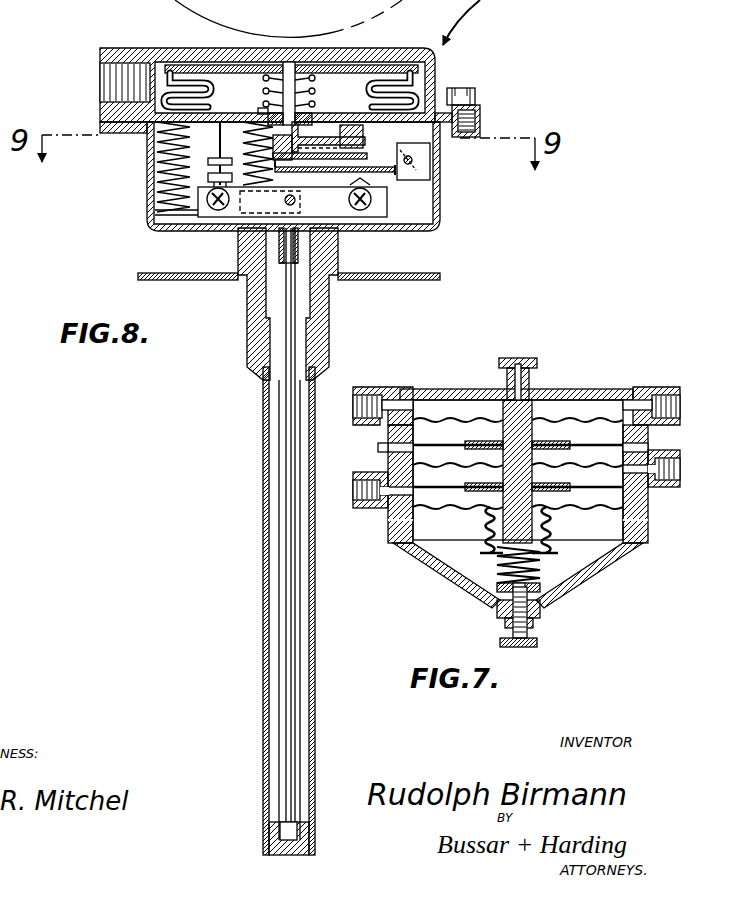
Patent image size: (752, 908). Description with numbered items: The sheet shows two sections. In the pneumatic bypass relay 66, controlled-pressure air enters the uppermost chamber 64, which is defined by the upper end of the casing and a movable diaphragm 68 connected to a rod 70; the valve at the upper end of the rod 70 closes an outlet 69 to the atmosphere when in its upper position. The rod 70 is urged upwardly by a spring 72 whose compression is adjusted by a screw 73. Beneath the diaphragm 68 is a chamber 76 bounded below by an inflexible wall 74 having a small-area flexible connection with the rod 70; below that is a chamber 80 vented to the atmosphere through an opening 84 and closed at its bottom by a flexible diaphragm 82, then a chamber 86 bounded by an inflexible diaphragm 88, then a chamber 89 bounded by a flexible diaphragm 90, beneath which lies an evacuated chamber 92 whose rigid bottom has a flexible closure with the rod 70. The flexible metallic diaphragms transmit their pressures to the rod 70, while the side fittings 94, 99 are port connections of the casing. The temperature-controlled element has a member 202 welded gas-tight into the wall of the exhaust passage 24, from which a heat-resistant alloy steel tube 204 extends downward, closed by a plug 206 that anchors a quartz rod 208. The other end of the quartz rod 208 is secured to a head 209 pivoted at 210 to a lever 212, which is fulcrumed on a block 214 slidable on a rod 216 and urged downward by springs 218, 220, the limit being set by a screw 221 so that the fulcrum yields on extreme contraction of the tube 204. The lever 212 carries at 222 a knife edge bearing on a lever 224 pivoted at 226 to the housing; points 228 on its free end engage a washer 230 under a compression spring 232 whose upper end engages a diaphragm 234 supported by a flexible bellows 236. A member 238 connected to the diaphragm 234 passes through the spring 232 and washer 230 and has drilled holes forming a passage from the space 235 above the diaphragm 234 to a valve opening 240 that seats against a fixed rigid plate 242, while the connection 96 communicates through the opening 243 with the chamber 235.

In FIG. 8, the opening 243 is at (100, 82).
In FIG. 8, the diaphragm 234 is at (388, 70).
In FIG. 8, the flexible bellows 236 is at (170, 80).
In FIG. 8, the space above the diaphragm 235 is at (415, 85).
In FIG. 8, the washer 230 is at (300, 118).
In FIG. 8, the compression spring 232 is at (265, 88).
In FIG. 8, the upwardly extending points 228 is at (262, 111).
In FIG. 8, the fixed rigid plate 242 is at (460, 100).
In FIG. 8, the member 238 is at (478, 118).
In FIG. 8, the spring 218 is at (177, 155).
In FIG. 8, the spring 220 is at (265, 135).
In FIG. 8, the rod 216 is at (215, 152).
In FIG. 8, the screw 221 is at (215, 170).
In FIG. 8, the block 214 is at (175, 210).
In FIG. 8, the lever 212 is at (385, 200).
In FIG. 8, the pivot 210 is at (292, 195).
In FIG. 8, the valve opening 240 is at (330, 125).
In FIG. 8, the lever 224 is at (395, 170).
In FIG. 8, the knife edge 222 is at (370, 172).
In FIG. 8, the pivot 226 is at (415, 158).
In FIG. 8, the exhaust passage 24 is at (425, 275).
In FIG. 8, the member 202 is at (335, 250).
In FIG. 8, the head 209 is at (270, 240).
In FIG. 8, the tube 204 is at (263, 565).
In FIG. 8, the quartz rod 208 is at (285, 688).
In FIG. 8, the plug 206 is at (280, 830).
In FIG. 7, the bypass relay 66 is at (600, 388).
In FIG. 7, the connection 96 is at (680, 413).
In FIG. 7, the port fitting 99 is at (680, 470).
In FIG. 7, the opening 84 is at (390, 452).
In FIG. 7, the port fitting 94 is at (356, 497).
In FIG. 7, the rod 70 is at (527, 415).
In FIG. 7, the outlet 69 is at (503, 392).
In FIG. 7, the uppermost chamber 64 is at (458, 413).
In FIG. 7, the movable diaphragm 68 is at (577, 412).
In FIG. 7, the chamber 76 is at (458, 438).
In FIG. 7, the inflexible wall 74 is at (577, 438).
In FIG. 7, the chamber 80 is at (458, 457).
In FIG. 7, the flexible diaphragm 82 is at (577, 457).
In FIG. 7, the chamber 86 is at (458, 479).
In FIG. 7, the inflexible diaphragm 88 is at (577, 479).
In FIG. 7, the chamber 89 is at (458, 498).
In FIG. 7, the flexible diaphragm 90 is at (577, 498).
In FIG. 7, the evacuated chamber 92 is at (463, 534).
In FIG. 7, the spring 72 is at (538, 573).
In FIG. 7, the screw 73 is at (537, 645).